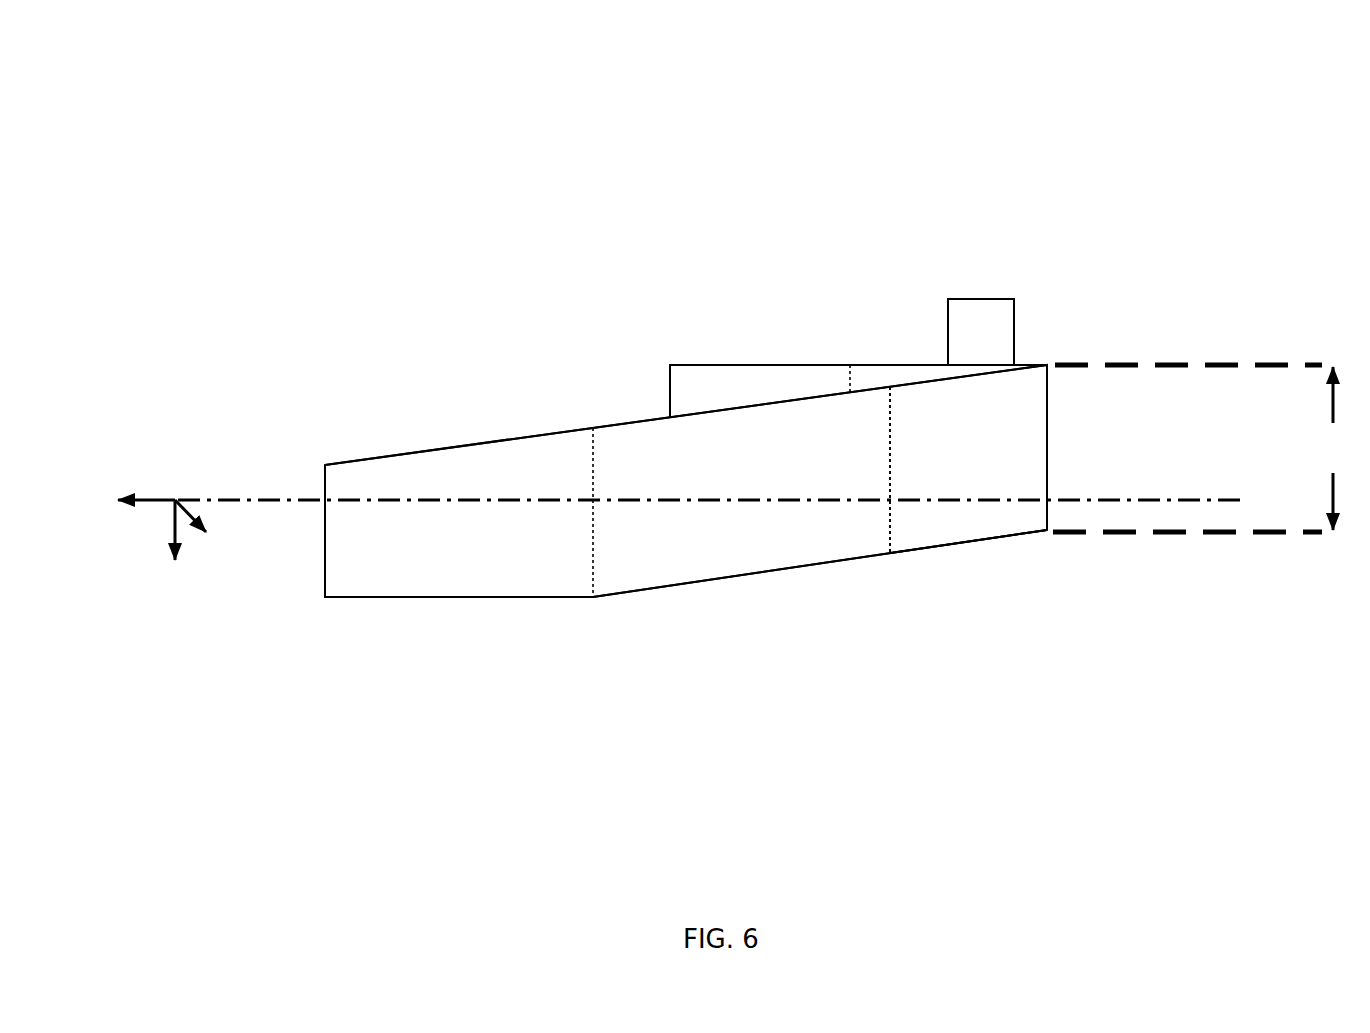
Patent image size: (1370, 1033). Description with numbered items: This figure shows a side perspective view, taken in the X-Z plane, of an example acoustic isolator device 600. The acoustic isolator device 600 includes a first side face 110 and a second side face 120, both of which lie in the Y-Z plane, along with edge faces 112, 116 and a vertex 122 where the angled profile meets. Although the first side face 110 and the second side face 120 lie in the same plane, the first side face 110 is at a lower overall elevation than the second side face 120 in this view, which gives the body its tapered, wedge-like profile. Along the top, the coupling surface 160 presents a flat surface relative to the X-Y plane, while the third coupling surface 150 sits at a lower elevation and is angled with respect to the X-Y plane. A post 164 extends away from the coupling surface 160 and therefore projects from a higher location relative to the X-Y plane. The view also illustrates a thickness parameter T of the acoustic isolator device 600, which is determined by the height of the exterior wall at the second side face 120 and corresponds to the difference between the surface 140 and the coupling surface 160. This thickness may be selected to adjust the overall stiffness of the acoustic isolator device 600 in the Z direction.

The acoustic isolator device 600 is at (1254, 102).
The first side face 110 is at (314, 482).
The edge face 112 is at (482, 580).
The edge face 116 is at (922, 529).
The second side face 120 is at (1079, 457).
The vertex 122 is at (755, 547).
The surface 140 is at (1042, 539).
The third coupling surface 150 is at (402, 452).
The coupling surface 160 is at (882, 360).
The post 164 is at (994, 285).